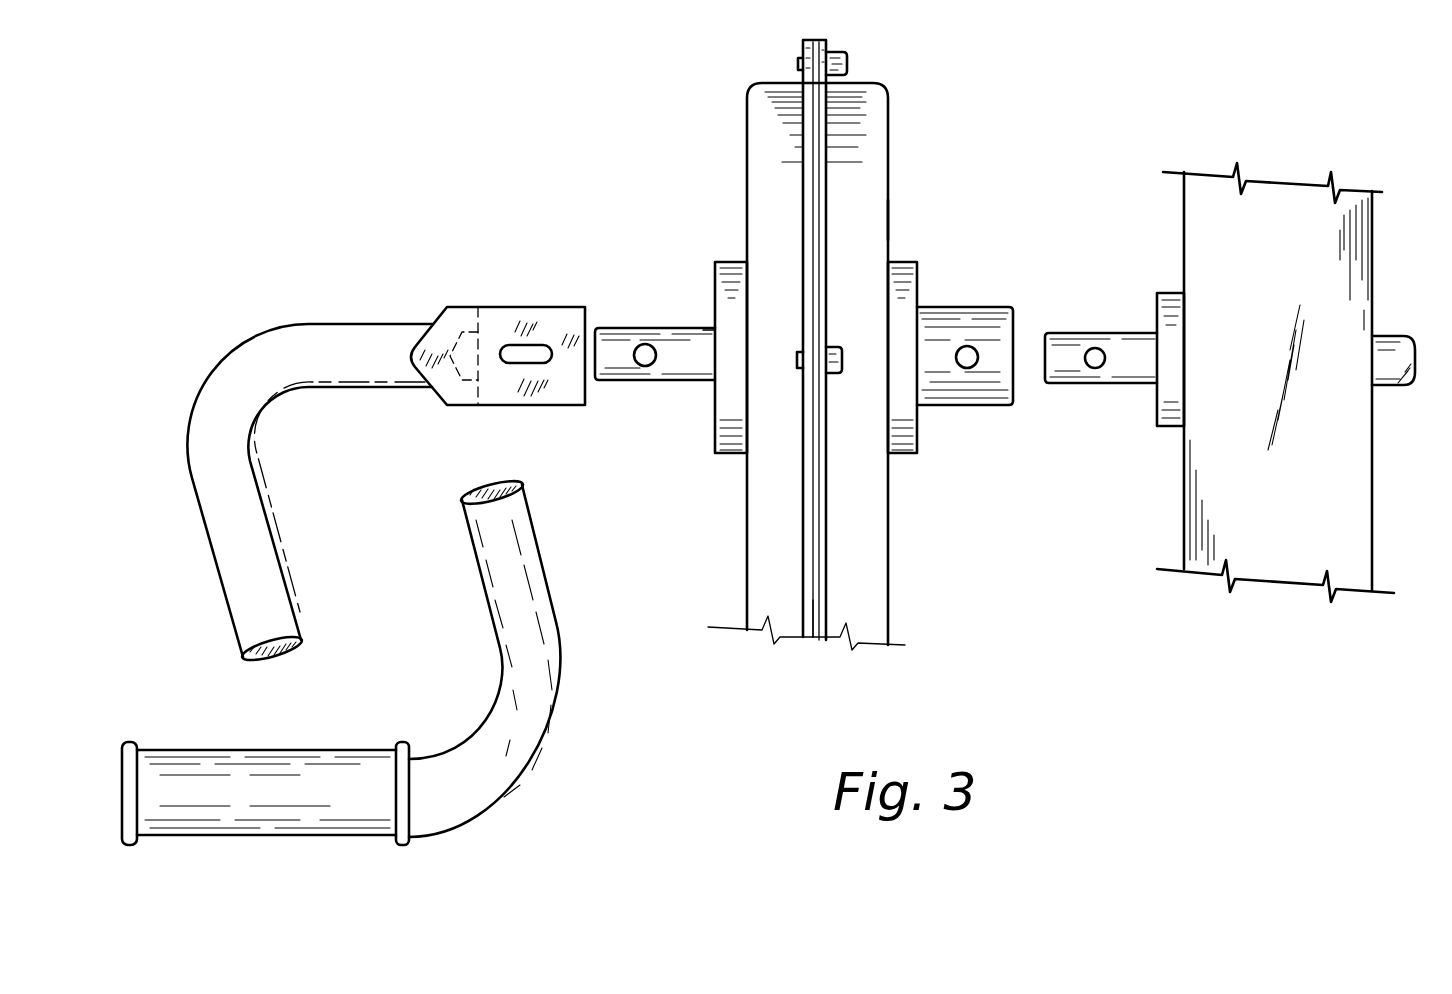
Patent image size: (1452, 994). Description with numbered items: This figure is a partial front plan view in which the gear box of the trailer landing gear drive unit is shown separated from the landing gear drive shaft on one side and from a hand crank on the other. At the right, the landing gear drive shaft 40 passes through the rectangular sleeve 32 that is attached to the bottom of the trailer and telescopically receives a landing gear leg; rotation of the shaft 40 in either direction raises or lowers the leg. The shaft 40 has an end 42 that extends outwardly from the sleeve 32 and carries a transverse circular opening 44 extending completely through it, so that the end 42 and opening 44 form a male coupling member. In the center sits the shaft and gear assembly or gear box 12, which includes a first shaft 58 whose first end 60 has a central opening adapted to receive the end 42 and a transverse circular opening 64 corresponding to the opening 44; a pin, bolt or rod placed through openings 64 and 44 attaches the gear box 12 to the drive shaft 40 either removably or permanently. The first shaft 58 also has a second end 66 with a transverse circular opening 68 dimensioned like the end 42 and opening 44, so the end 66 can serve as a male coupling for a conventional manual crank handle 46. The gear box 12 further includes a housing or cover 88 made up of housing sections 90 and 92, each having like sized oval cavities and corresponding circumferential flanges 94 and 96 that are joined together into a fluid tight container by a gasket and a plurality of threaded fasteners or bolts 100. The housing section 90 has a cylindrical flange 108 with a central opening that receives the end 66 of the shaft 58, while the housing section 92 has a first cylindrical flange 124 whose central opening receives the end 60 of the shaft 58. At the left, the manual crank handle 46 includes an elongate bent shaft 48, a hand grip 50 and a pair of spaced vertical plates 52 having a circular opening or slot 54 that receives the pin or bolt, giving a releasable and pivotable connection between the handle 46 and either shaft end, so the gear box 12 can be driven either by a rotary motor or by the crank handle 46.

The shaft and gear assembly or gear box 12 is at (812, 336).
The rectangular sleeve 32 is at (1338, 506).
The landing gear drive shaft 40 is at (1385, 336).
The shaft end 42 is at (1060, 383).
The transverse circular opening 44 is at (1095, 369).
The manual crank handle 46 is at (325, 349).
The elongate bent shaft 48 is at (563, 655).
The hand grip 50 is at (362, 836).
The spaced vertical plates 52 is at (504, 311).
The circular opening or slot 54 is at (547, 364).
The first shaft 58 is at (703, 330).
The first end 60 is at (972, 307).
The transverse circular opening 64 is at (967, 369).
The second end 66 is at (636, 328).
The transverse circular opening 68 is at (645, 367).
The housing or cover 88 is at (833, 353).
The housing section or casing 90 is at (748, 88).
The housing section or casing 92 is at (890, 220).
The circumferential flange 94 is at (803, 522).
The circumferential flange 96 is at (826, 598).
The threaded fasteners or bolts 100 is at (848, 58).
The cylindrical flange 108 is at (715, 447).
The first cylindrical flange 124 is at (917, 262).